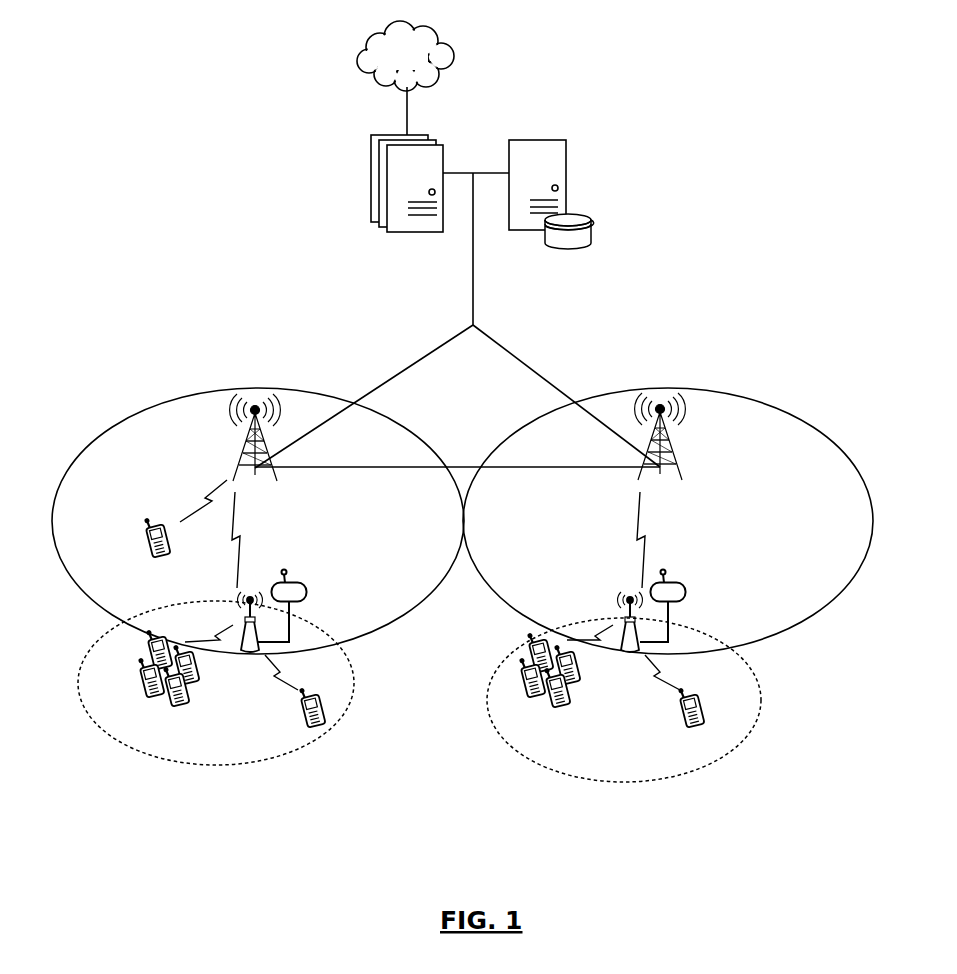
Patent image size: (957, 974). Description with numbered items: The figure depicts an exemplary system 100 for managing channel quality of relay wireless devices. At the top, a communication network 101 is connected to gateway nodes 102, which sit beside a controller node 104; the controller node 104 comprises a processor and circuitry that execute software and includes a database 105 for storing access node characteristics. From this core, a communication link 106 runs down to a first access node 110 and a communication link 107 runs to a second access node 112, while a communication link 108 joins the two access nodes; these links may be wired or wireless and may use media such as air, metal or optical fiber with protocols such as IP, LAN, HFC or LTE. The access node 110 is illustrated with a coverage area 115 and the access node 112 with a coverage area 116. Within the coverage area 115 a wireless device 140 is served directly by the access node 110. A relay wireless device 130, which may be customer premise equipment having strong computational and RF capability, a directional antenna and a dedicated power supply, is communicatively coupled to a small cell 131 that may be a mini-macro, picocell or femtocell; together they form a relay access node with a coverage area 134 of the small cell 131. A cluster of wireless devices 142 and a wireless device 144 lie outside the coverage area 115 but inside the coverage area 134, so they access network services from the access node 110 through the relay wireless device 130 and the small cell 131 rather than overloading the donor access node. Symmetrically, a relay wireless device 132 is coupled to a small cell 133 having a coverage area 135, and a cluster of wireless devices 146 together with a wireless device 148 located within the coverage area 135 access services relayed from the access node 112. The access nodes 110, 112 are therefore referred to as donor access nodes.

The system 100 is at (499, 89).
The communication network 101 is at (426, 66).
The gateway nodes 102 is at (372, 147).
The controller node 104 is at (568, 158).
The database 105 is at (590, 213).
The communication link 106 is at (410, 365).
The communication link 107 is at (517, 353).
The communication link 108 is at (407, 467).
The access node 110 is at (253, 480).
The access node 112 is at (658, 480).
The coverage area 115 is at (203, 390).
The coverage area 116 is at (610, 390).
The relay wireless device 130 is at (293, 582).
The small cell 131 is at (240, 617).
The relay wireless device 132 is at (675, 582).
The small cell 133 is at (623, 620).
The coverage area 134 is at (305, 743).
The coverage area 135 is at (750, 670).
The wireless device 140 is at (145, 547).
The wireless devices 142 is at (308, 728).
The wireless device 144 is at (195, 693).
The wireless devices 146 is at (688, 728).
The wireless device 148 is at (575, 692).